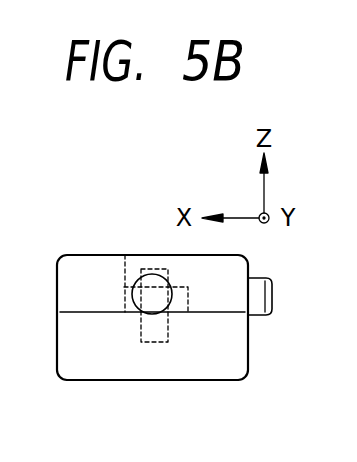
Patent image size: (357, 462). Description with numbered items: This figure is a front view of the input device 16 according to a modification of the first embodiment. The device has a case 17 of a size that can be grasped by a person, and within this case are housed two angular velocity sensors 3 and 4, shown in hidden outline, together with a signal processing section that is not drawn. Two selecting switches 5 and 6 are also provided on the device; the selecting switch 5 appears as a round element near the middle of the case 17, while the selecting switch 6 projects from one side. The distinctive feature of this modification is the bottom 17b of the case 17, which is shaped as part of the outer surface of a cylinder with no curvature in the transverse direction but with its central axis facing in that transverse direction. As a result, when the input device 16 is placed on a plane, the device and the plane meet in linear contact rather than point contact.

The input device 16 is at (146, 195).
The angular velocity sensor 4 is at (125, 255).
The selecting switch 5 is at (148, 305).
The angular velocity sensor 3 is at (160, 342).
The selecting switch 6 is at (266, 296).
The case 17 is at (240, 350).
The bottom 17b is at (217, 382).